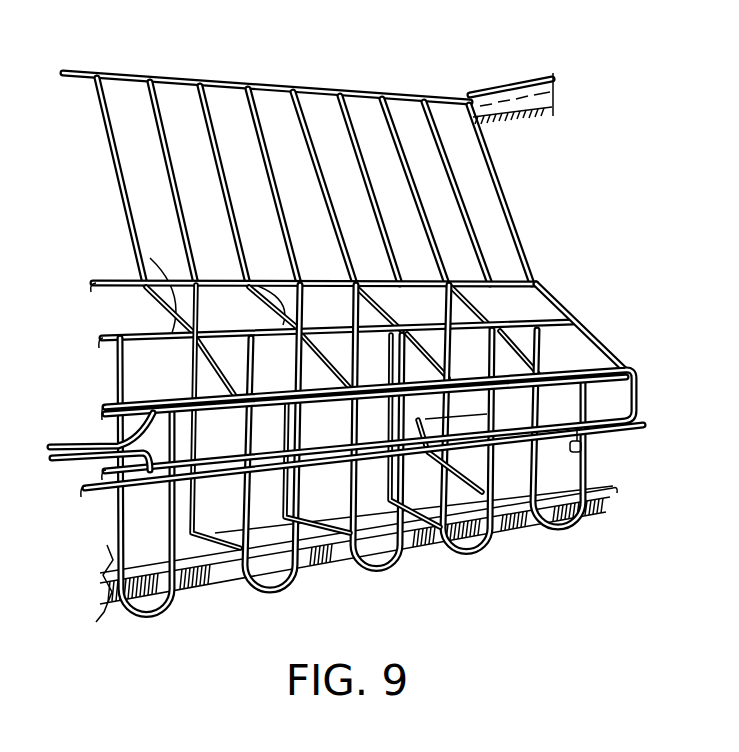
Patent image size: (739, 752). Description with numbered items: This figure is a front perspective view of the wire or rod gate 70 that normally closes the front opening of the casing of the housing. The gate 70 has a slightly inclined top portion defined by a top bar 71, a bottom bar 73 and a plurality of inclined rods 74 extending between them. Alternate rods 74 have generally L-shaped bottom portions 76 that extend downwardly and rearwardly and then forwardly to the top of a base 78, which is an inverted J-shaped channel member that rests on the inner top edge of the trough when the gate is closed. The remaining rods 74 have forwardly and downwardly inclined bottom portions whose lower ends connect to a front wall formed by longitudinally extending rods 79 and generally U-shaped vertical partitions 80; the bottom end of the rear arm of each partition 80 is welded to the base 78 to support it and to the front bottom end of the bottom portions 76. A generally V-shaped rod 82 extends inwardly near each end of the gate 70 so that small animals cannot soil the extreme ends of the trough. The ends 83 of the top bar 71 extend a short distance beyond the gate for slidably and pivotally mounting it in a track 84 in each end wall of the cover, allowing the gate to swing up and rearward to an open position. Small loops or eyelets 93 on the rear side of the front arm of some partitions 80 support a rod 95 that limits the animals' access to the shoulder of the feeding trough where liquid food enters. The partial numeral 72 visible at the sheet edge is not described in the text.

The gate 70 is at (595, 245).
The top bar 71 is at (273, 80).
The rod 72 is at (4, 232).
The bottom bar 73 is at (535, 250).
The inclined rods 74 is at (442, 125).
The L-shaped bottom portions 76 is at (200, 512).
The base 78 is at (262, 280).
The longitudinally extending rods 79 is at (79, 442).
The U-shaped vertical partitions 80 is at (553, 536).
The V-shaped rod 82 is at (428, 540).
The ends of the gate top bar 83 is at (501, 88).
The track 84 is at (522, 80).
The loops or eyelets 93 is at (588, 450).
The rod 95 is at (643, 423).